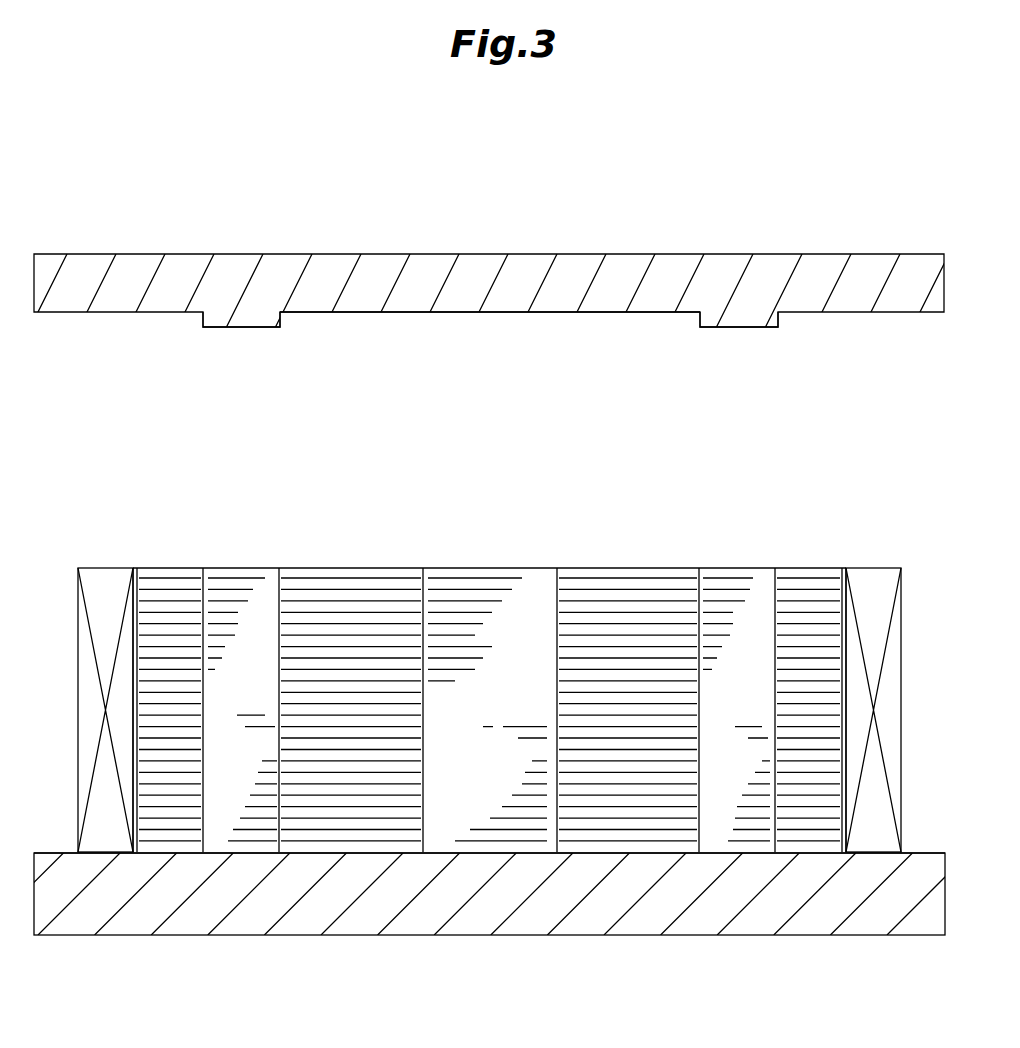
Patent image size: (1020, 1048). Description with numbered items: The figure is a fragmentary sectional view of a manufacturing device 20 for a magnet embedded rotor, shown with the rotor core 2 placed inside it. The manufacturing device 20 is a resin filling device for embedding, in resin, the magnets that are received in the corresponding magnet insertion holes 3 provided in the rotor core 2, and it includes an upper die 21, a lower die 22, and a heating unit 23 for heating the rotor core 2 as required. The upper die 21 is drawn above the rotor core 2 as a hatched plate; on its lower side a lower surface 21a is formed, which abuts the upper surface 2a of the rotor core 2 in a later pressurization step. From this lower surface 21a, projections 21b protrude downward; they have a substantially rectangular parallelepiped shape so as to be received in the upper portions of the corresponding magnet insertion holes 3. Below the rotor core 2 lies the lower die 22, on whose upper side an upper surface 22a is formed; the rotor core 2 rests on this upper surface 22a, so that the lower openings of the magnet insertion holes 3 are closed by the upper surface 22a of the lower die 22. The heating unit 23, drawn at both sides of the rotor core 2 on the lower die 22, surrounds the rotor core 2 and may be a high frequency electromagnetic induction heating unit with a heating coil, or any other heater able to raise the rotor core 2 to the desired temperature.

The manufacturing device 20 is at (158, 196).
The upper die 21 is at (776, 248).
The lower surface 21a is at (562, 313).
The projections 21b is at (250, 330).
The lower die 22 is at (172, 950).
The upper surface 22a is at (56, 854).
The heating unit 23 is at (87, 628).
The rotor core 2 is at (506, 560).
The upper surface 2a is at (340, 567).
The magnet insertion holes 3 is at (204, 618).